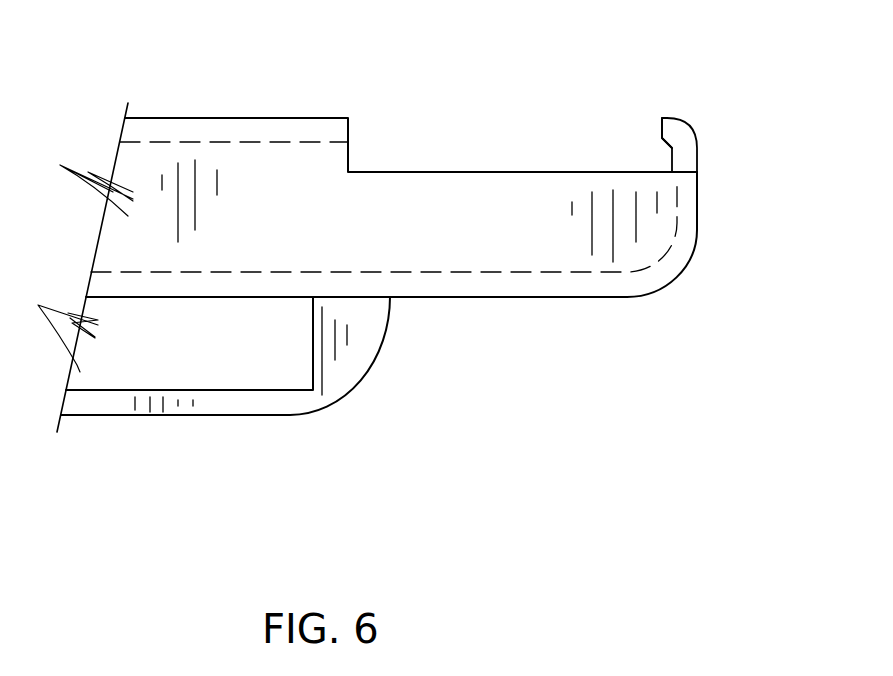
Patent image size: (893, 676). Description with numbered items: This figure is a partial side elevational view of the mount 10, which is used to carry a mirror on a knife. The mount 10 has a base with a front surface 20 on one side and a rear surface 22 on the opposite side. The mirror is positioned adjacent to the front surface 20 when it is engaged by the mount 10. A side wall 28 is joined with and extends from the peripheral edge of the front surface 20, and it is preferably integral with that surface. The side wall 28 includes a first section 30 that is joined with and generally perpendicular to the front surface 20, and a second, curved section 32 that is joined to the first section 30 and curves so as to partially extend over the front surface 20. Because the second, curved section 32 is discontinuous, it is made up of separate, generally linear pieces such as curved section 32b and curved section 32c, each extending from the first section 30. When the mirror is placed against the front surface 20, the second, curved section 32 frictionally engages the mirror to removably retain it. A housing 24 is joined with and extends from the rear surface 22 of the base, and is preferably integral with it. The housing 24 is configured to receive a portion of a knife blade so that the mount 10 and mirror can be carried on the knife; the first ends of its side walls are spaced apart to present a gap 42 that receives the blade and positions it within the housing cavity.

The mount 10 is at (578, 317).
The front surface 20 is at (485, 270).
The rear surface 22 is at (465, 298).
The housing 24 is at (290, 405).
The side wall 28 is at (703, 201).
The first section 30 is at (442, 208).
The second, curved section 32 is at (706, 130).
The curved section 32b is at (672, 132).
The curved section 32c is at (283, 130).
The gap 42 is at (189, 355).